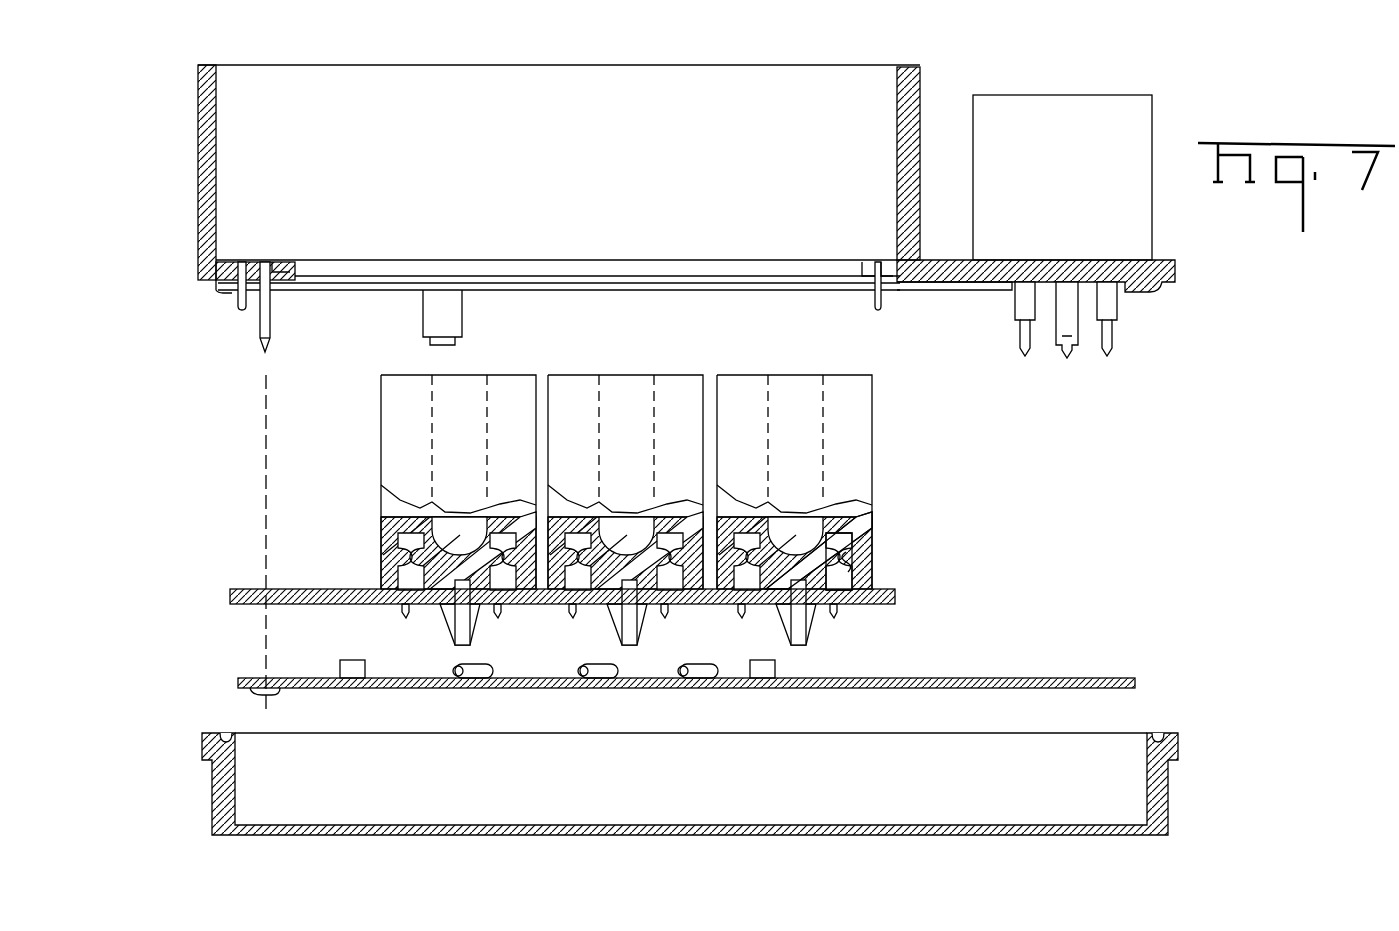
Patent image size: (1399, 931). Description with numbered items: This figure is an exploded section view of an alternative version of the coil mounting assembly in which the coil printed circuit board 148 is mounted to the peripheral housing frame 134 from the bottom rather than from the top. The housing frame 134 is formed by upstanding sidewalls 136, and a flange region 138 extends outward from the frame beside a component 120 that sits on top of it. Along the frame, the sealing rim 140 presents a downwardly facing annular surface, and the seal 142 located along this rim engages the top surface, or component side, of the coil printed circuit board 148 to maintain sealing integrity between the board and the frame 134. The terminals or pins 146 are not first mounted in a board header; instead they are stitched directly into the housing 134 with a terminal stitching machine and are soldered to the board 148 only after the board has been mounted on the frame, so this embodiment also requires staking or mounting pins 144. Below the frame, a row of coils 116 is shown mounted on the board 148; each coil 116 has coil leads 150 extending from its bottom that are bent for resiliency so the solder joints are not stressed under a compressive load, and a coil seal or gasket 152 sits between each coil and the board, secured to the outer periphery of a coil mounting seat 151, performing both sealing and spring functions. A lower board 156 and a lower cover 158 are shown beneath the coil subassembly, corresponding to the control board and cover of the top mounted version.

The peripheral housing frame 134 is at (893, 66).
The sidewalls 136 is at (912, 110).
The housing flange 138 is at (958, 278).
The sealing rim 140 is at (278, 268).
The seal 142 is at (282, 298).
The staking or mounting pins 144 is at (236, 308).
The terminals or pins 146 is at (258, 345).
The electrical component 120 is at (1075, 105).
The coil 116 is at (848, 466).
The coil mounting seat 151 is at (868, 527).
The coil leads 150 is at (877, 578).
The coil seal or gasket 152 is at (857, 558).
The coil printed circuit board 148 is at (235, 598).
The printed circuit board 156 is at (1030, 680).
The base tray 158 is at (1165, 795).